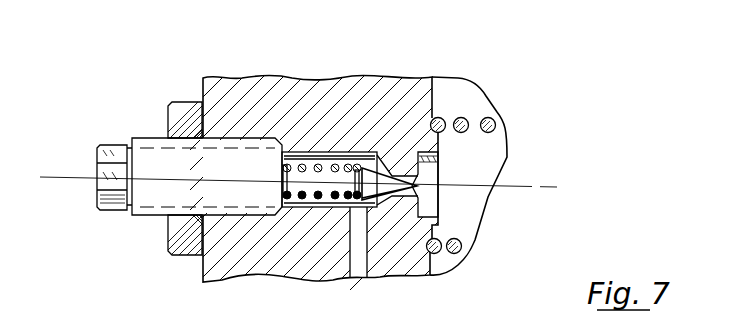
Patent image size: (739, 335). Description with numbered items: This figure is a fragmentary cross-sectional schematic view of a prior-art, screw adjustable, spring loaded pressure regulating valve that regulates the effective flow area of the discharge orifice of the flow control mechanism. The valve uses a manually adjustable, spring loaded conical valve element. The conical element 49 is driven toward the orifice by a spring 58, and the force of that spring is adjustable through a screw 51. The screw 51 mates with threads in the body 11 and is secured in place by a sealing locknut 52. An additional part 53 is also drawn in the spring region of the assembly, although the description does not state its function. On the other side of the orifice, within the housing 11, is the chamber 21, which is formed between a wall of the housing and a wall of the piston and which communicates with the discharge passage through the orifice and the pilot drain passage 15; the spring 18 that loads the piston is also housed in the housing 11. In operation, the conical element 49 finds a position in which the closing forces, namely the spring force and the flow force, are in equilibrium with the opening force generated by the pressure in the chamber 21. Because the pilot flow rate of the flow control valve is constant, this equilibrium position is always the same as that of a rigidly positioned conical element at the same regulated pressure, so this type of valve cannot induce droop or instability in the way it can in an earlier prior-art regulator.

The housing 11 is at (292, 77).
The pilot drain passage 15 is at (358, 265).
The spring 18 is at (488, 117).
The chamber 21 is at (480, 182).
The conical element 49 is at (385, 150).
The screw 51 is at (147, 217).
The sealing locknut 52 is at (178, 255).
The spring sleeve 53 is at (322, 202).
The spring 58 is at (337, 168).